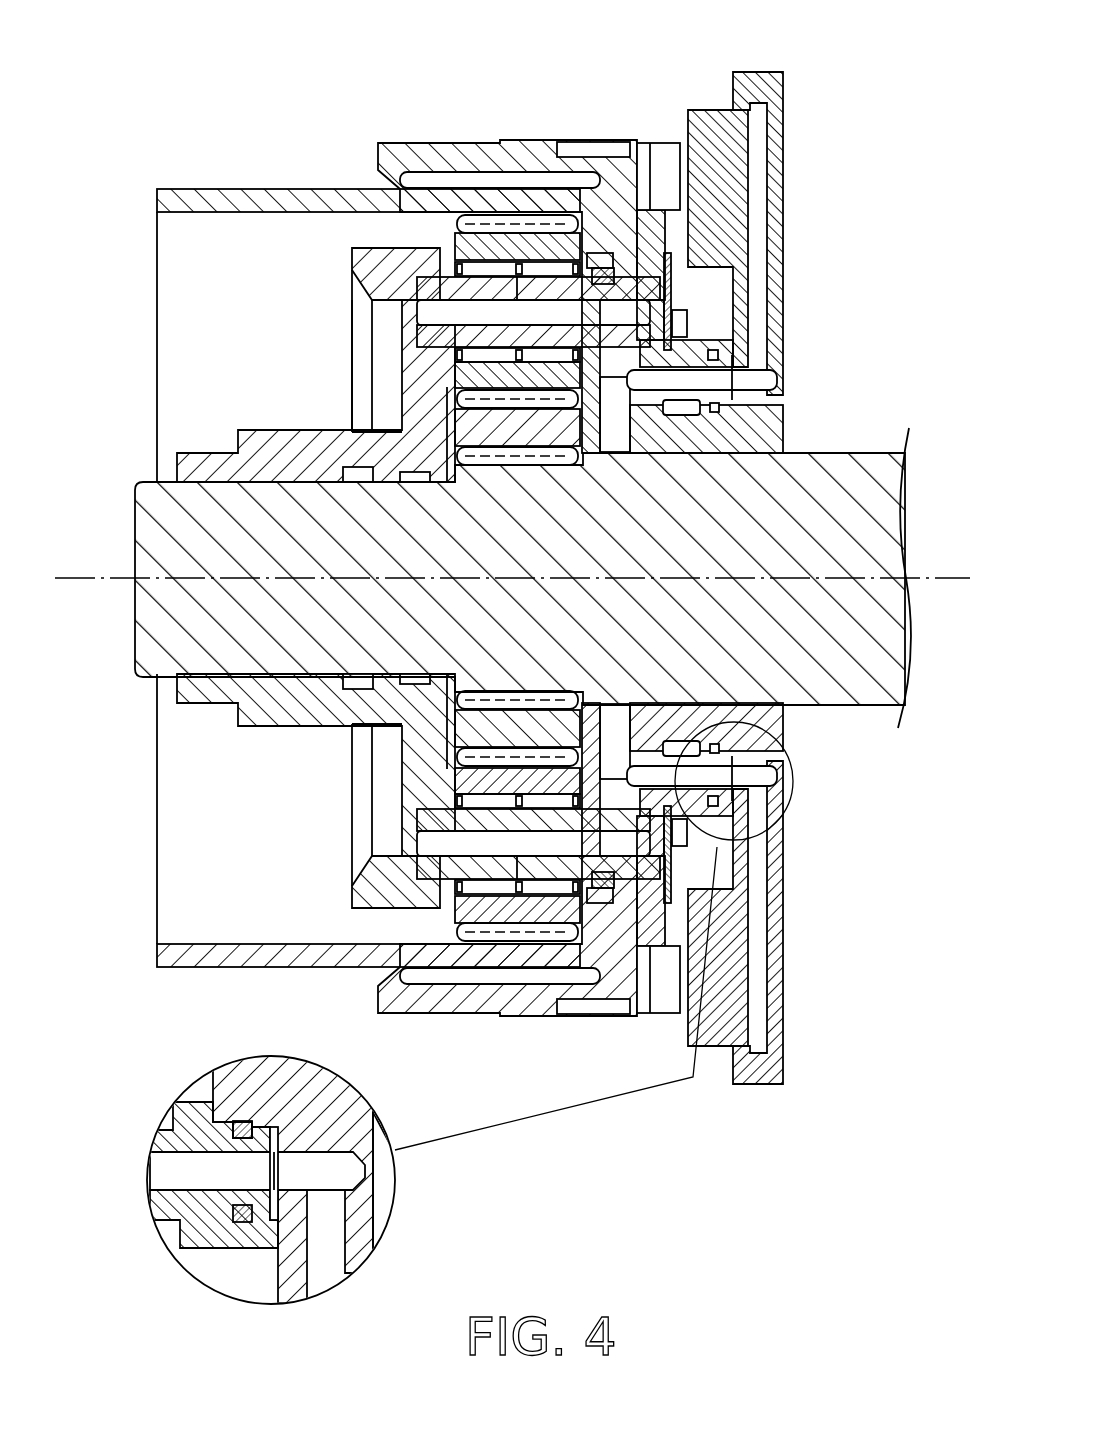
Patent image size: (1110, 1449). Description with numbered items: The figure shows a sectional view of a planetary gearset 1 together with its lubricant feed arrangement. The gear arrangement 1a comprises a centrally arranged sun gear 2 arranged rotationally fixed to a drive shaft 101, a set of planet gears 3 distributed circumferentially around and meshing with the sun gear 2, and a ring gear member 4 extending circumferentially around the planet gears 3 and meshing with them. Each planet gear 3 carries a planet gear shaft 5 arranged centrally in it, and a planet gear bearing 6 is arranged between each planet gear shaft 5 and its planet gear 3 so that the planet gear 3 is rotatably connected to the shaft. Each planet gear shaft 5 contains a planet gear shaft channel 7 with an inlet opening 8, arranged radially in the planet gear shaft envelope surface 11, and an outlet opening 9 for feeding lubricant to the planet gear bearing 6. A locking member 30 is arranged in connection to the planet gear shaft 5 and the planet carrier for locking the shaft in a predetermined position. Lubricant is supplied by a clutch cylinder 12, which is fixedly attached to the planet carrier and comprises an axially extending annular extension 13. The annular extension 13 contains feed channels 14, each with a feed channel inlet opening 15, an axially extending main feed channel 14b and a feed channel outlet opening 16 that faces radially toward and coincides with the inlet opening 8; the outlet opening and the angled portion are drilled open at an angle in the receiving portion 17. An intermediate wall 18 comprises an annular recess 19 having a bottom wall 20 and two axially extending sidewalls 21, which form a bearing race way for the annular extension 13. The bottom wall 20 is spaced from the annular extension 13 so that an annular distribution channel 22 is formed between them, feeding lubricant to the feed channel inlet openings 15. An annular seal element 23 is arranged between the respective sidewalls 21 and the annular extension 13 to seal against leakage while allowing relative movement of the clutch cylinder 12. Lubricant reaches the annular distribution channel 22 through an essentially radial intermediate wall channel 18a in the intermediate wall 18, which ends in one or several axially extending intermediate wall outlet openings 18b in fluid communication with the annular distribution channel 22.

The planetary gearset 1 is at (212, 80).
The gear arrangement 1a is at (348, 377).
The sun gear 2 is at (472, 423).
The planet gears 3 is at (472, 242).
The ring gear member 4 is at (348, 188).
The planet gear shaft 5 is at (447, 353).
The planet gear bearing 6 is at (472, 270).
The planet gear shaft channel 7 is at (438, 313).
The inlet opening 8 is at (645, 333).
The outlet opening 9 is at (505, 275).
The planet gear shaft envelope surface 11 is at (455, 412).
The clutch cylinder 12 is at (577, 137).
The annular extension 13 is at (213, 1128).
The feed channel 14 is at (175, 1170).
The main feed channel 14b is at (778, 397).
The feed channel inlet opening 15 is at (268, 1165).
The feed channel outlet opening 16 is at (733, 360).
The receiving portion 17 is at (672, 255).
The intermediate wall 18 is at (752, 68).
The intermediate wall channel 18a is at (757, 335).
The intermediate wall outlet opening 18b is at (750, 377).
The annular recess 19 is at (280, 1205).
The bottom wall 20 is at (275, 1135).
The sidewalls 21 is at (250, 1125).
The annular distribution channel 22 is at (275, 1178).
The annular seal element 23 is at (723, 407).
The locking member 30 is at (605, 275).
The drive shaft 101 is at (240, 535).